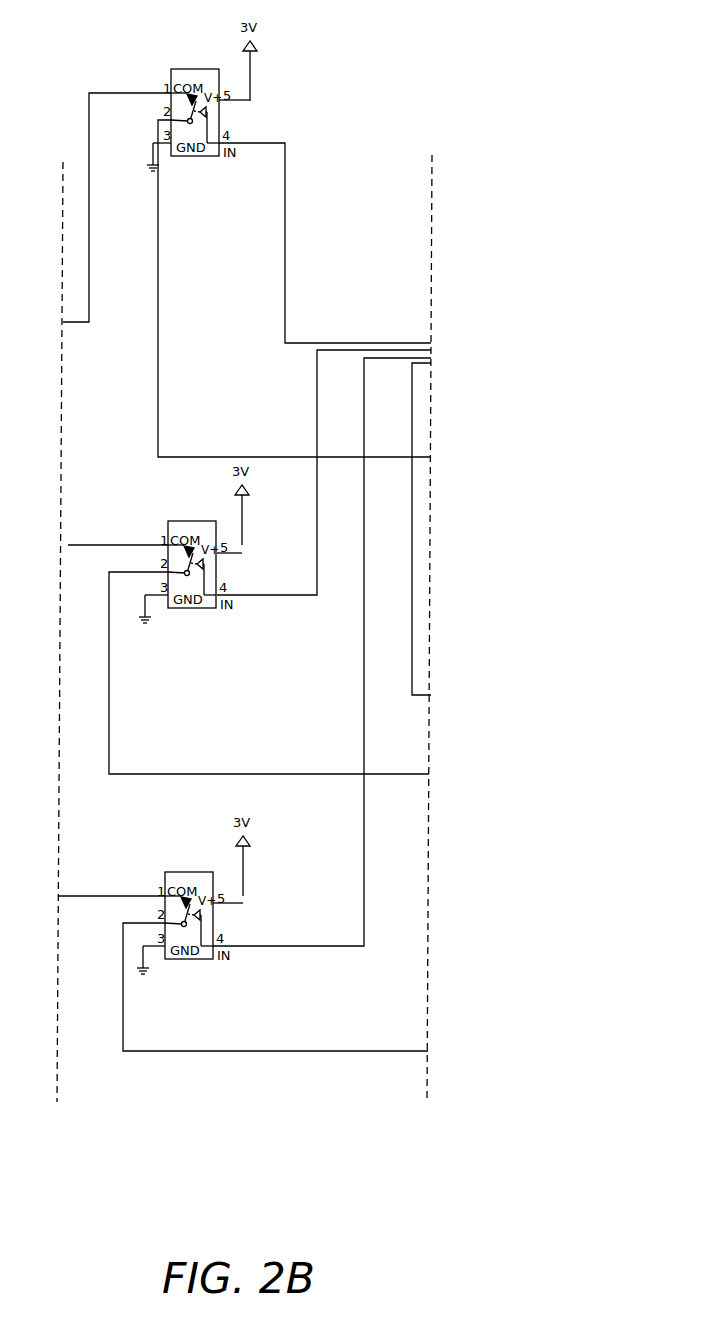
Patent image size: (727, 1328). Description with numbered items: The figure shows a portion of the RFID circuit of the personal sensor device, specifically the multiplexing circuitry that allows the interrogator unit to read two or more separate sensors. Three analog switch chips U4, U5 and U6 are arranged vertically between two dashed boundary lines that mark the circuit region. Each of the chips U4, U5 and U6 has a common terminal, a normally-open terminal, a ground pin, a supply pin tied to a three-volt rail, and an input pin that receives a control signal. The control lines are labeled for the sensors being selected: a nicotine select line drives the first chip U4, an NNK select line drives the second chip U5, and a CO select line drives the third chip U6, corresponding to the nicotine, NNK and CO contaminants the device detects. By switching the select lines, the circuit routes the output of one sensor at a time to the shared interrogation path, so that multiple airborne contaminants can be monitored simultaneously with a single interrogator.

The MAX4514 analog switch U4 is at (247, 238).
The MAX4514 analog switch U5 is at (249, 560).
The MAX4514 analog switch U6 is at (244, 704).